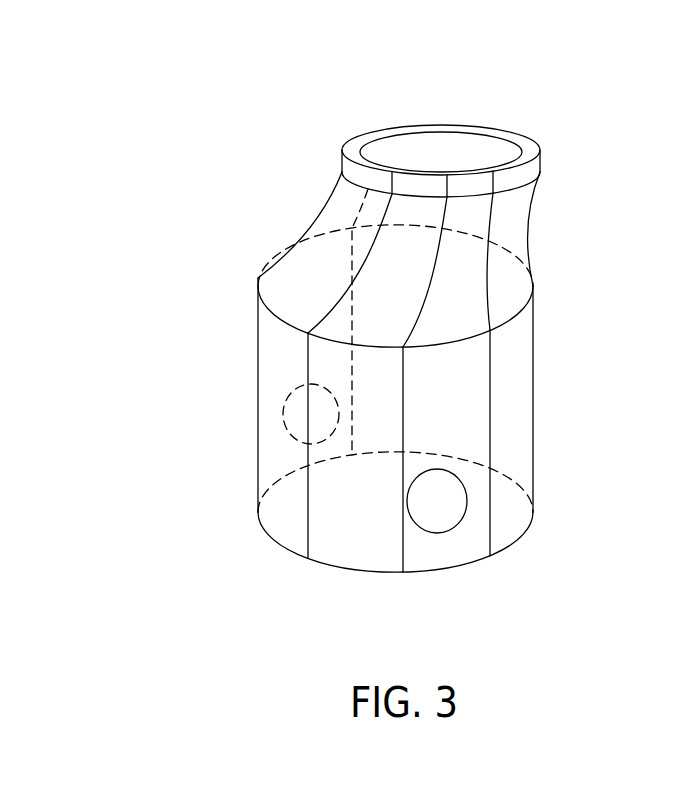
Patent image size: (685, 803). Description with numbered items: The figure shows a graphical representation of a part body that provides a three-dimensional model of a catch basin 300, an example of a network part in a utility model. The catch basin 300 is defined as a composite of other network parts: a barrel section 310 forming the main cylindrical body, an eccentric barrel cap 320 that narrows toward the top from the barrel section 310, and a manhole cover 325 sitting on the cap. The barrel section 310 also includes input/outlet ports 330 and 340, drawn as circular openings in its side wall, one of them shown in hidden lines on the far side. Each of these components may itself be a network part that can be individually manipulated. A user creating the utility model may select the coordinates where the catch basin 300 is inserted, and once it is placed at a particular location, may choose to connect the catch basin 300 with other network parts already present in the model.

The catch basin 300 is at (272, 185).
The barrel section 310 is at (572, 277).
The eccentric barrel cap 320 is at (572, 145).
The manhole cover 325 is at (473, 140).
The input/outlet port 330 is at (283, 410).
The input/outlet port 340 is at (467, 493).